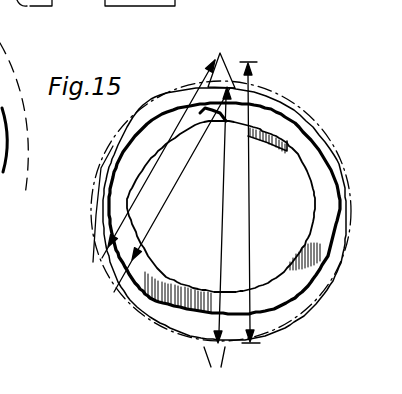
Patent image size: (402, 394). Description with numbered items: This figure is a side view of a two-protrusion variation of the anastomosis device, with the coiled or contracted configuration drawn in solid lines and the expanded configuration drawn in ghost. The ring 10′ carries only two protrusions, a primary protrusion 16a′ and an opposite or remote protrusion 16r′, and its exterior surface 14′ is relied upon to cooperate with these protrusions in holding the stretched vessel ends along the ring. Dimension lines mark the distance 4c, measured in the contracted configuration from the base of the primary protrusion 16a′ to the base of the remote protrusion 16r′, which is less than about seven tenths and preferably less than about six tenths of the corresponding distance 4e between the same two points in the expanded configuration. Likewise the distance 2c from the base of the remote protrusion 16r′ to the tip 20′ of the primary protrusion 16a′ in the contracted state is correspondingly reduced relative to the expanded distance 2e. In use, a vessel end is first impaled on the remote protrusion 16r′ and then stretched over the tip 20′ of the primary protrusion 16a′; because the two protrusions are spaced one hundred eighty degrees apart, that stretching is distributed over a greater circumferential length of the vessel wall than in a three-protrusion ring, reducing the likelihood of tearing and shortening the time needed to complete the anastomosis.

The ring 10′ is at (130, 155).
The exterior surface 14′ is at (100, 212).
The primary protrusion 16a′ is at (228, 66).
The remote protrusion 16r′ is at (126, 282).
The tip 20′ is at (227, 44).
The distance Z in contracted configuration 2c is at (223, 216).
The distance Y in contracted configuration 4c is at (224, 208).
The distance Z in expanded configuration 2e is at (255, 202).
The distance Y in expanded configuration 4e is at (216, 215).